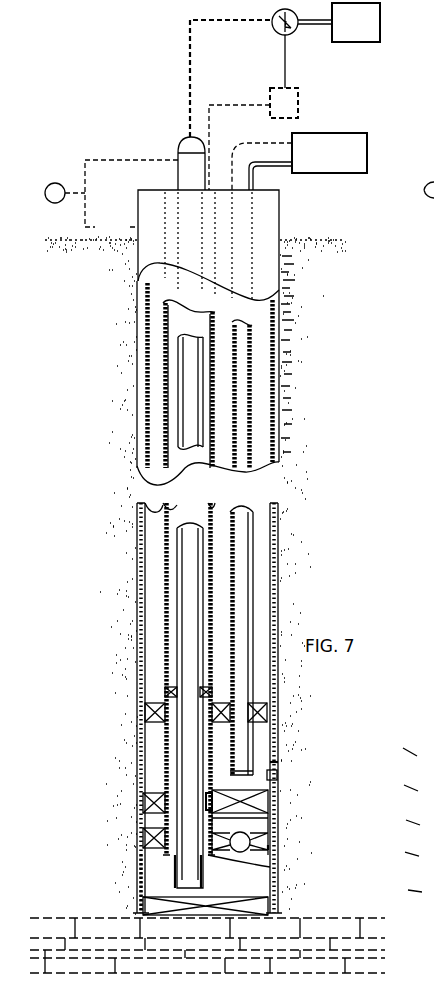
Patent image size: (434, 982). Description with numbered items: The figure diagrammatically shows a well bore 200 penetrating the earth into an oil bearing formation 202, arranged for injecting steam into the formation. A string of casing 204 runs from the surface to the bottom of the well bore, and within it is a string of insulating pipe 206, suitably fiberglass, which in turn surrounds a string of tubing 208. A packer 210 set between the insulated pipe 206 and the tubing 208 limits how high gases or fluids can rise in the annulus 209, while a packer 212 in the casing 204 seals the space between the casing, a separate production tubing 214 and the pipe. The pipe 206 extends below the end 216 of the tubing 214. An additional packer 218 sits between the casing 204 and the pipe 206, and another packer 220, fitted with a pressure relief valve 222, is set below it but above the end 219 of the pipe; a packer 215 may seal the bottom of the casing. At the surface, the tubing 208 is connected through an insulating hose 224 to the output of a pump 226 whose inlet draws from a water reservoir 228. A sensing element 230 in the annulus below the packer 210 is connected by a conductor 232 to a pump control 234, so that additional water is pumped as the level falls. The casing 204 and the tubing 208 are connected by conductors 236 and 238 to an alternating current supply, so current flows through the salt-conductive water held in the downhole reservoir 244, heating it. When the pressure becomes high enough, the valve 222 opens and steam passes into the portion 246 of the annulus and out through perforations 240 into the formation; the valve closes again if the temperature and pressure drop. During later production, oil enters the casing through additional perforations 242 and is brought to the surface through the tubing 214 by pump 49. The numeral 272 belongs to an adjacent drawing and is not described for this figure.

The power unit 49 is at (360, 133).
The well bore 200 is at (281, 370).
The oil bearing formation 202 is at (282, 766).
The casing 204 is at (279, 520).
The pipe 206 is at (168, 383).
The tubing 208 is at (183, 366).
The annulus 209 is at (177, 400).
The packer 210 is at (165, 692).
The packer 212 is at (267, 712).
The tubing 214 is at (253, 606).
The packer 215 is at (270, 900).
The end 216 is at (270, 792).
The packer 218 is at (270, 818).
The end 219 is at (270, 867).
The packer 220 is at (143, 846).
The pressure relief valve 222 is at (270, 848).
The insulating hose 224 is at (206, 22).
The pump 226 is at (290, 38).
The water reservoir 228 is at (380, 34).
The sensing element 230 is at (272, 790).
The conductor 232 is at (212, 100).
The pump control 234 is at (298, 118).
The conductor 236 is at (85, 214).
The conductor 238 is at (147, 160).
The perforations 240 is at (270, 832).
The perforations 242 is at (280, 778).
The reservoir 244 is at (137, 877).
The portion of the annulus 246 is at (143, 820).
The power line 272 is at (418, 537).